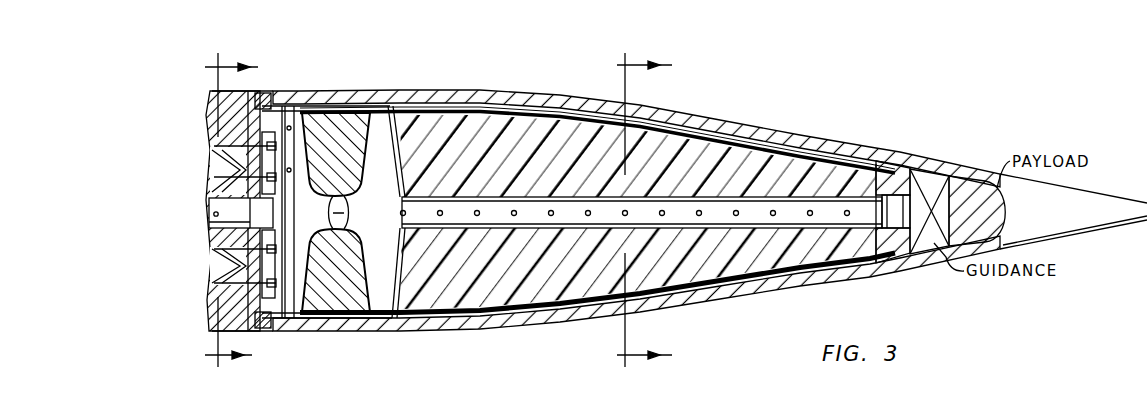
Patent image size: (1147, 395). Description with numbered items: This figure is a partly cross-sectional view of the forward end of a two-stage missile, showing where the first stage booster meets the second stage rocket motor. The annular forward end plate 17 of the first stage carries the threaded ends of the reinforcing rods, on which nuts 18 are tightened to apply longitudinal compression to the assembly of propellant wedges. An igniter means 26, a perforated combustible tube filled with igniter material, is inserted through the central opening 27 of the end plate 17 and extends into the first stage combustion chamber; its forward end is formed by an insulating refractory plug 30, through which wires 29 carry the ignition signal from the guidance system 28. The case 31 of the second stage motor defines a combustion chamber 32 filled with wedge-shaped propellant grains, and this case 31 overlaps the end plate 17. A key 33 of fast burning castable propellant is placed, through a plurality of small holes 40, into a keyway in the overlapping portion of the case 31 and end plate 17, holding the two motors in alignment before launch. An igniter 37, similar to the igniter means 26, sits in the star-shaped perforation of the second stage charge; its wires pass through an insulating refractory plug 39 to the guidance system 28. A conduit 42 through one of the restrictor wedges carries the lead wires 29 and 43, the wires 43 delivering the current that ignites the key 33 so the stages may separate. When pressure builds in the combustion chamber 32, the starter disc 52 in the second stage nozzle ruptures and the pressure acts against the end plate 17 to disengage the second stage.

The end plate 17 is at (228, 103).
The nuts 18 is at (290, 320).
The igniter means 26 is at (218, 208).
The central opening 27 is at (284, 236).
The guidance system 28 is at (938, 180).
The wires 29 is at (294, 140).
The insulating refractory plug 30 is at (217, 242).
The case 31 is at (718, 118).
The combustion chamber 32 is at (386, 223).
The key 33 is at (272, 100).
The igniter 37 is at (832, 200).
The insulating refractory plug 39 is at (891, 230).
The small holes 40 is at (263, 93).
The conduit 42 is at (636, 127).
The wires 43 is at (286, 108).
The starter disc 52 is at (332, 213).